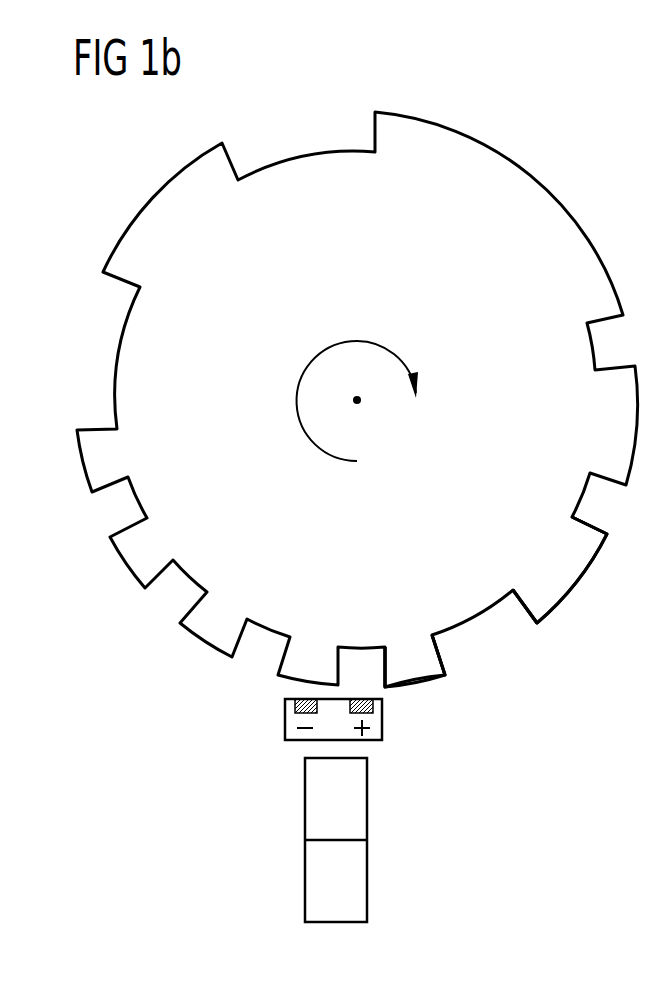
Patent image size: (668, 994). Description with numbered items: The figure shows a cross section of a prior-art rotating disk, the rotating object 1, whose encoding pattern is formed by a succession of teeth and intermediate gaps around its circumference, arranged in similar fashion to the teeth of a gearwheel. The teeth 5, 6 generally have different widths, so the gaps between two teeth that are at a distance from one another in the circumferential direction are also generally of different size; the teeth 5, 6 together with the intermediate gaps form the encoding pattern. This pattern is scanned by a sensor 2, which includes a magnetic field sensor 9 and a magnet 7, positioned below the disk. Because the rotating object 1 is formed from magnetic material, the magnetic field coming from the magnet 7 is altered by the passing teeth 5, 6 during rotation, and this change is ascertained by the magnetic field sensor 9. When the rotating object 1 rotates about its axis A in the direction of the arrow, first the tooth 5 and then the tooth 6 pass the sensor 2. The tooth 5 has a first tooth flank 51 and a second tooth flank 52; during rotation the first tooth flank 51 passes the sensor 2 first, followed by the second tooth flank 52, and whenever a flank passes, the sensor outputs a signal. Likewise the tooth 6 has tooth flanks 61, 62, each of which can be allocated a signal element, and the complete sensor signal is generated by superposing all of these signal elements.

The rotating object 1 is at (559, 143).
The sensor 2 is at (318, 810).
The tooth 5 is at (416, 684).
The first tooth flank 51 is at (383, 672).
The second tooth flank 52 is at (447, 655).
The tooth 6 is at (580, 579).
The tooth flank 61 is at (522, 610).
The tooth flank 62 is at (594, 520).
The magnet 7 is at (280, 820).
The magnetic field sensor 9 is at (285, 720).
The axis A is at (360, 403).